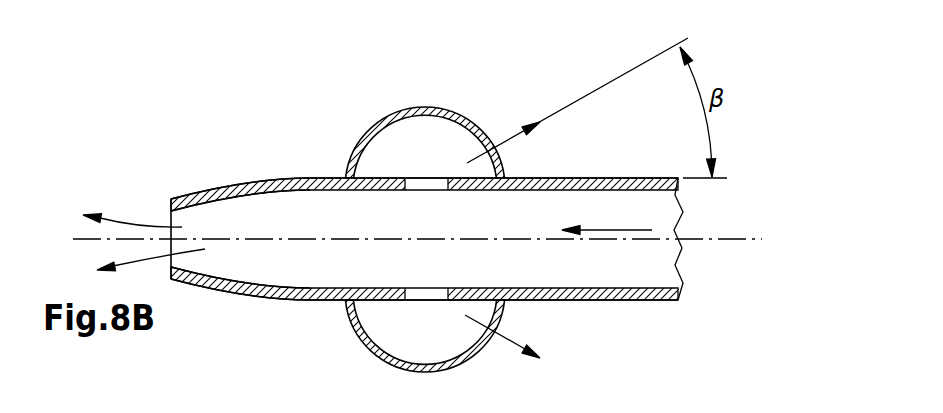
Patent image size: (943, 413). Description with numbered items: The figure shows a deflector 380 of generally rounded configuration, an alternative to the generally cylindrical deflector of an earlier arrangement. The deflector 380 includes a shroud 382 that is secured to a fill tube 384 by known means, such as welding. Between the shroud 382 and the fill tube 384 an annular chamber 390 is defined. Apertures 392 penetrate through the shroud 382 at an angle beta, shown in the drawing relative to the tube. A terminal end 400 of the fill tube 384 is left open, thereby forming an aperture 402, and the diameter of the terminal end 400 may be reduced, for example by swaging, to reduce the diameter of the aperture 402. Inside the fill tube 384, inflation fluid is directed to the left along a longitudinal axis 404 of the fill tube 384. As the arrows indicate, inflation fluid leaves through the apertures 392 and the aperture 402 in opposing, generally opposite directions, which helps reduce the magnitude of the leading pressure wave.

The deflector 380 is at (322, 317).
The shroud 382 is at (440, 108).
The fill tube 384 is at (650, 297).
The annular chamber 390 is at (388, 157).
The apertures 392 is at (487, 145).
The terminal end 400 is at (183, 200).
The aperture 402 is at (170, 220).
The longitudinal axis 404 is at (720, 240).